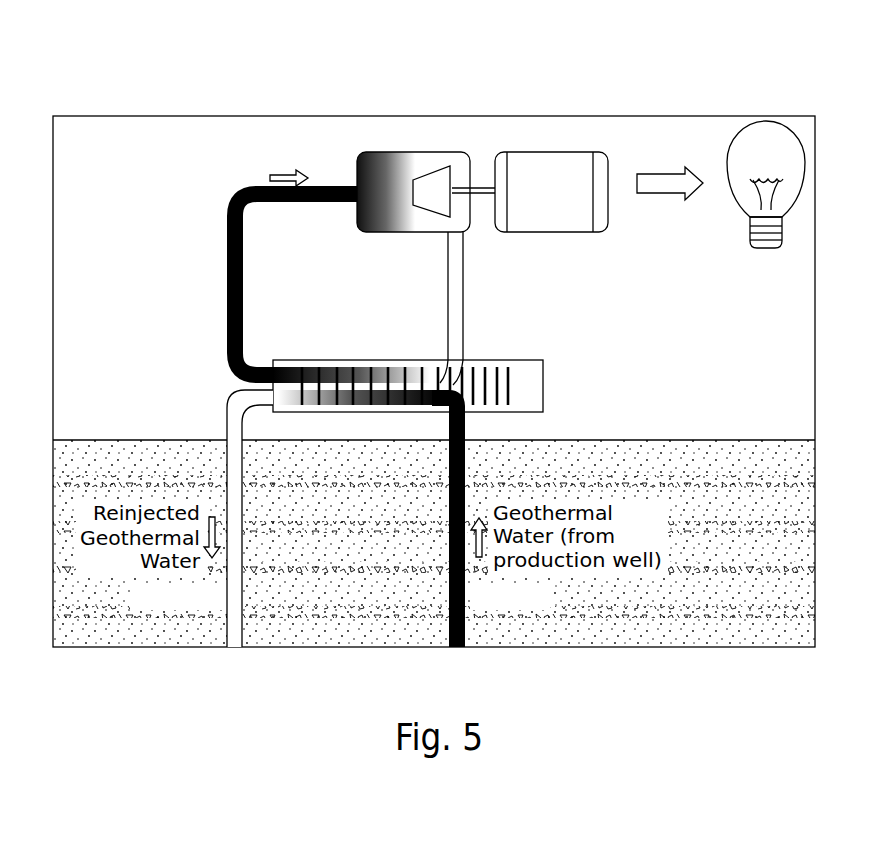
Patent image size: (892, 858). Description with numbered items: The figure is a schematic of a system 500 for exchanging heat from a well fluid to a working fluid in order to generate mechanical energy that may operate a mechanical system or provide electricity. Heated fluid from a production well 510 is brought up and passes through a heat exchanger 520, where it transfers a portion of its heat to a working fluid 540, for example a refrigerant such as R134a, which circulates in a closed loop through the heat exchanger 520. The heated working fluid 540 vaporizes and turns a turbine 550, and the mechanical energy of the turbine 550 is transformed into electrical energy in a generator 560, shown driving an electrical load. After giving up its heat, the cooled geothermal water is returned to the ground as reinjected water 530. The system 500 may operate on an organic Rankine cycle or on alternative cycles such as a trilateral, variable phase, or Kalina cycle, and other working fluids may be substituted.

The system 500 is at (243, 100).
The production well 510 is at (465, 582).
The heat exchanger 520 is at (502, 360).
The reinjected geothermal water pipe 530 is at (227, 583).
The working fluid 540 is at (227, 242).
The turbine 550 is at (388, 232).
The generator 560 is at (558, 232).